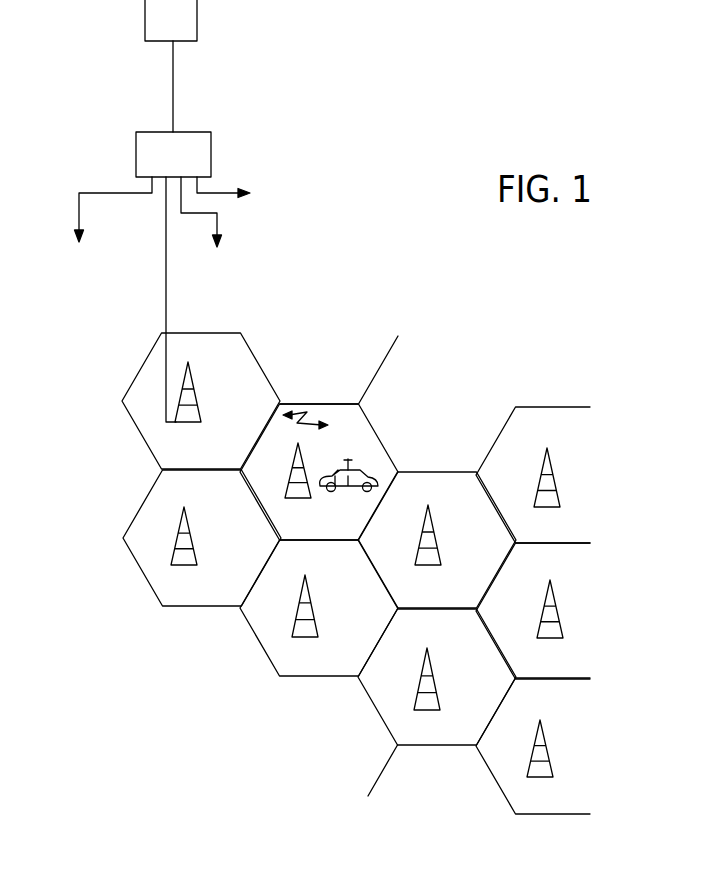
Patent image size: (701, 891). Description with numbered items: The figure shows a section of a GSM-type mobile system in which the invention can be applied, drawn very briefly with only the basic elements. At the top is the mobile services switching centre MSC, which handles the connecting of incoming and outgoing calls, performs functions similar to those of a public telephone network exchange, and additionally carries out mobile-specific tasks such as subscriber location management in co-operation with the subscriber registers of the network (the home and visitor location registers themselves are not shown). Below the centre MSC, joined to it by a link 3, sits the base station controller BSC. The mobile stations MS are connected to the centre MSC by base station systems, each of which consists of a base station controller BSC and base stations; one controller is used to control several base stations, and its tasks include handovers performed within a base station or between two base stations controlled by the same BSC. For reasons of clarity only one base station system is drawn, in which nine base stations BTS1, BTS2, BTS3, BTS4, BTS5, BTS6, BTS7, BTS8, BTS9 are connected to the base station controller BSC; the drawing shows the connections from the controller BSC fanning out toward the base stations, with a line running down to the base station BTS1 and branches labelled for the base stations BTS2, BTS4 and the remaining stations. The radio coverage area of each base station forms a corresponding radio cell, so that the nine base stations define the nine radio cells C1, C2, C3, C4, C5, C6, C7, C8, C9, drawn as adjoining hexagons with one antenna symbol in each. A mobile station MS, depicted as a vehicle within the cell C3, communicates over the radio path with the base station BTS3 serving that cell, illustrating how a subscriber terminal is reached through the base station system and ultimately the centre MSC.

The link between MSC and BSC 3 is at (174, 90).
The mobile services switching centre MSC is at (171, 20).
The base station controller BSC is at (202, 277).
The mobile station MS is at (330, 451).
The radio cell C1 is at (140, 432).
The radio cell C2 is at (143, 576).
The radio cell C3 is at (322, 403).
The radio cell C4 is at (266, 652).
The radio cell C5 is at (440, 471).
The radio cell C6 is at (447, 747).
The radio cell C7 is at (548, 545).
The radio cell C8 is at (552, 681).
The radio cell C9 is at (552, 816).
The base station BTS1 is at (196, 412).
The base station BTS2 is at (198, 555).
The base station BTS3 is at (317, 489).
The base station BTS4 is at (316, 625).
The base station BTS5 is at (440, 554).
The base station BTS6 is at (436, 697).
The base station BTS7 is at (557, 493).
The base station BTS8 is at (556, 629).
The base station BTS9 is at (550, 768).